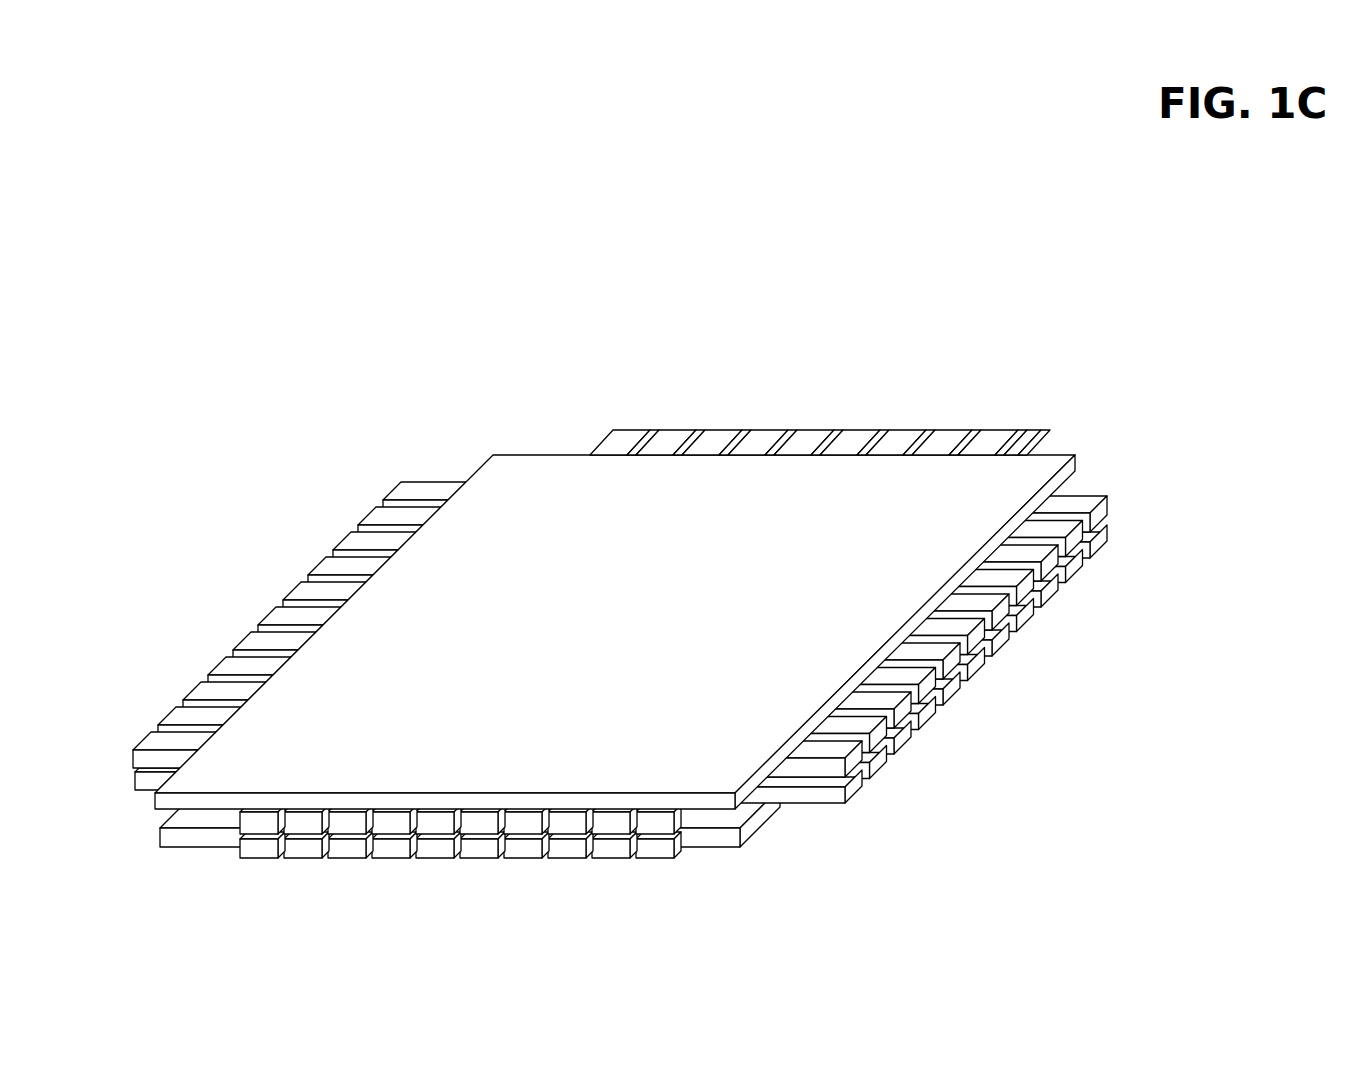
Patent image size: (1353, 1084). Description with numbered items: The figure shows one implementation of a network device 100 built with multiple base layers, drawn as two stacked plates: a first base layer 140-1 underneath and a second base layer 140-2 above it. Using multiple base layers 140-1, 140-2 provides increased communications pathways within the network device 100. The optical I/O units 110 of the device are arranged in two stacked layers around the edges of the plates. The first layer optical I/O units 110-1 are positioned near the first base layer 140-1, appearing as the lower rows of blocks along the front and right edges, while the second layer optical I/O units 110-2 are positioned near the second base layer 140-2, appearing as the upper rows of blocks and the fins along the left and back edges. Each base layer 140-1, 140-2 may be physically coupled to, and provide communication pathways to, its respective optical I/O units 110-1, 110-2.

The network device 100 is at (646, 635).
The optical I/O unit 110 is at (820, 395).
The first layer optical I/O unit 110-1 is at (116, 789).
The second layer optical I/O unit 110-2 is at (297, 545).
The first base layer 140-1 is at (748, 838).
The second base layer 140-2 is at (712, 762).